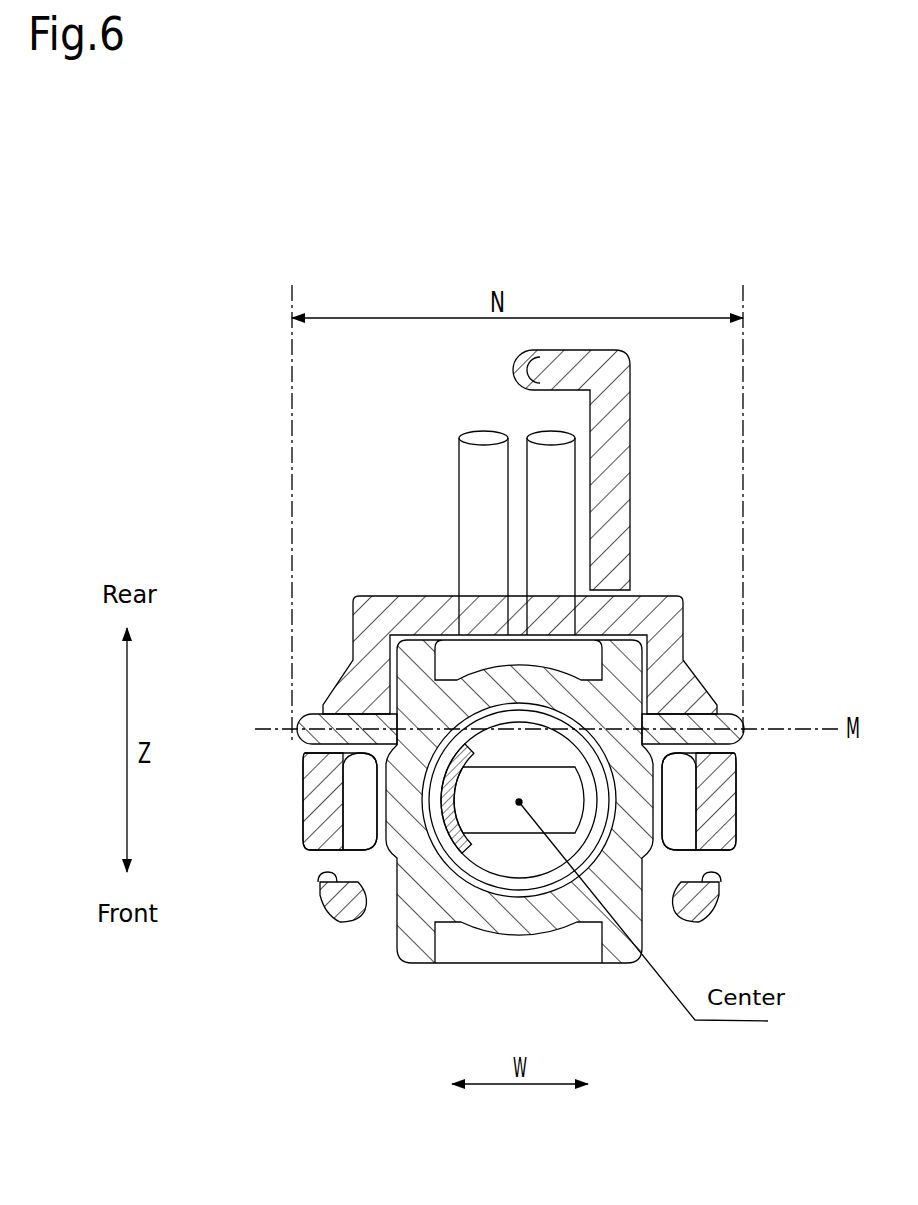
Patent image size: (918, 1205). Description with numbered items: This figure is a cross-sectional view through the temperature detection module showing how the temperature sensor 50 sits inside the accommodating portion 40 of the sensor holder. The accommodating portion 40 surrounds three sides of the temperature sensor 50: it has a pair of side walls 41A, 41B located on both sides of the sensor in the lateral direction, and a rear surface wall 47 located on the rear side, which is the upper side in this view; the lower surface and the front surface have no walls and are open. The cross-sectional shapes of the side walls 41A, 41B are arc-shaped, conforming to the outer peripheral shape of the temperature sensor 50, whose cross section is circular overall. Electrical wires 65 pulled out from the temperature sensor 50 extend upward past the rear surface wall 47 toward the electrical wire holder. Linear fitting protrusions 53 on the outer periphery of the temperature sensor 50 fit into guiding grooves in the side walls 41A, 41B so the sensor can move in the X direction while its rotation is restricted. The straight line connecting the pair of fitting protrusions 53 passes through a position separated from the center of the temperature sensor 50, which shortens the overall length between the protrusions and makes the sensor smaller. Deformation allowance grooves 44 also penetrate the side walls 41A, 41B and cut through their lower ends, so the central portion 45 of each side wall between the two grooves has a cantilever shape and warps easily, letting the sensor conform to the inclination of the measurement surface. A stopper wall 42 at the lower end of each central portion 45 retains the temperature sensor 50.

The accommodating portion 40 is at (529, 687).
The side wall 41A is at (750, 775).
The side wall 41B is at (290, 776).
The stopper wall 42 is at (355, 822).
The deformation allowance groove 44 is at (318, 874).
The central portion 45 is at (318, 797).
The rear surface wall 47 is at (445, 608).
The temperature sensor 50 is at (540, 912).
The fitting protrusion 53 is at (305, 720).
The electrical wire 65 is at (493, 478).